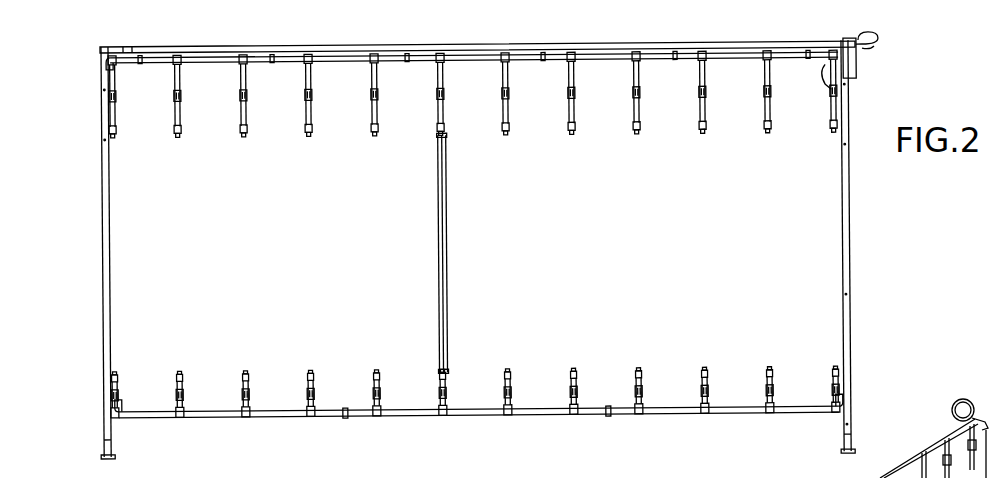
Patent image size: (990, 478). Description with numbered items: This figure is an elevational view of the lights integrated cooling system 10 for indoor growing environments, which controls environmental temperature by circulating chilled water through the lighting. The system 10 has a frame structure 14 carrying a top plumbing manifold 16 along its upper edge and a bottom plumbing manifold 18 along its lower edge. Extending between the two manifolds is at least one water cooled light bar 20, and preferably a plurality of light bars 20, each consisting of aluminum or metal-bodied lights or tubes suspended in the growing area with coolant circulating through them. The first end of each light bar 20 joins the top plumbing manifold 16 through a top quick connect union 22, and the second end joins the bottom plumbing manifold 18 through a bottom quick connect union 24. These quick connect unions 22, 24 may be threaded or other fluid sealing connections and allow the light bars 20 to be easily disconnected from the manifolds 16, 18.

The lights integrated cooling system 10 is at (905, 241).
The frame structure 14 is at (849, 298).
The top plumbing manifold 16 is at (664, 55).
The bottom plumbing manifold 18 is at (672, 418).
The water cooled light bar 20 is at (447, 276).
The top quick connect union 22 is at (508, 110).
The bottom quick connect union 24 is at (508, 394).